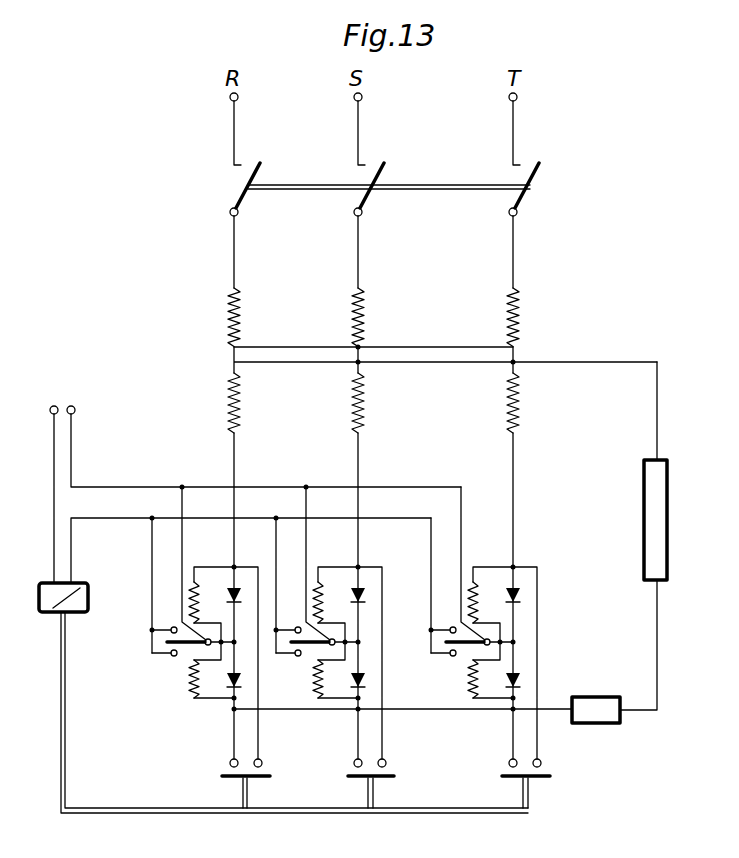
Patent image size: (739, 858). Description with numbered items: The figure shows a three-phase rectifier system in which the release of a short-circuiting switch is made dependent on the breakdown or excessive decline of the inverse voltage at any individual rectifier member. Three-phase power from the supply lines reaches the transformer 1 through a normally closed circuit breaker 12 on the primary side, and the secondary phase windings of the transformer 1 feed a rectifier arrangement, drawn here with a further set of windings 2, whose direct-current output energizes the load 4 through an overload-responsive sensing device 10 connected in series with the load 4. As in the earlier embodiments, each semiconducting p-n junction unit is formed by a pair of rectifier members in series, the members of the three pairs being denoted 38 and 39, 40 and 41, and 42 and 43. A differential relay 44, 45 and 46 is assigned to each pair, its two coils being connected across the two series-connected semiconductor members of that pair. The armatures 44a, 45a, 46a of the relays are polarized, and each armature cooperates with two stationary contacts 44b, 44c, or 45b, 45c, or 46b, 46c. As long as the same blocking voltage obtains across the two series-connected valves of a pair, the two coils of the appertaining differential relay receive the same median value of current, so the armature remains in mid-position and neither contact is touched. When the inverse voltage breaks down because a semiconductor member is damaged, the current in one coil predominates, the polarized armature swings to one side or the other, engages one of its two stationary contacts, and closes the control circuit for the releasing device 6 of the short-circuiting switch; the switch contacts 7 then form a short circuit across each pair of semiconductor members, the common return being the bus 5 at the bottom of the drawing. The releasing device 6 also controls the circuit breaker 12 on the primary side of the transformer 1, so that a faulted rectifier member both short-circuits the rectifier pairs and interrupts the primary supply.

The transformer 1 is at (213, 370).
The second resistor group 2 is at (442, 390).
The load 4 is at (643, 536).
The current reducing switch 5 is at (343, 840).
The releasing device 6 is at (94, 592).
The short-circuiting switch contacts 7 is at (389, 779).
The overload-responsive sensing device 10 is at (611, 698).
The circuit breaker 12 is at (214, 200).
The rectifier member 38 is at (225, 595).
The rectifier member 39 is at (224, 681).
The rectifier member 40 is at (348, 594).
The rectifier member 41 is at (348, 680).
The rectifier member 42 is at (504, 596).
The rectifier member 43 is at (503, 681).
The differential relay 44 is at (212, 556).
The polarized armature 44a is at (200, 649).
The stationary contact 44b is at (172, 627).
The stationary contact 44c is at (171, 655).
The differential relay 45 is at (339, 556).
The polarized armature 45a is at (324, 649).
The stationary contact 45b is at (296, 627).
The stationary contact 45c is at (295, 655).
The differential relay 46 is at (497, 556).
The polarized armature 46a is at (479, 649).
The stationary contact 46b is at (451, 627).
The stationary contact 46c is at (450, 655).